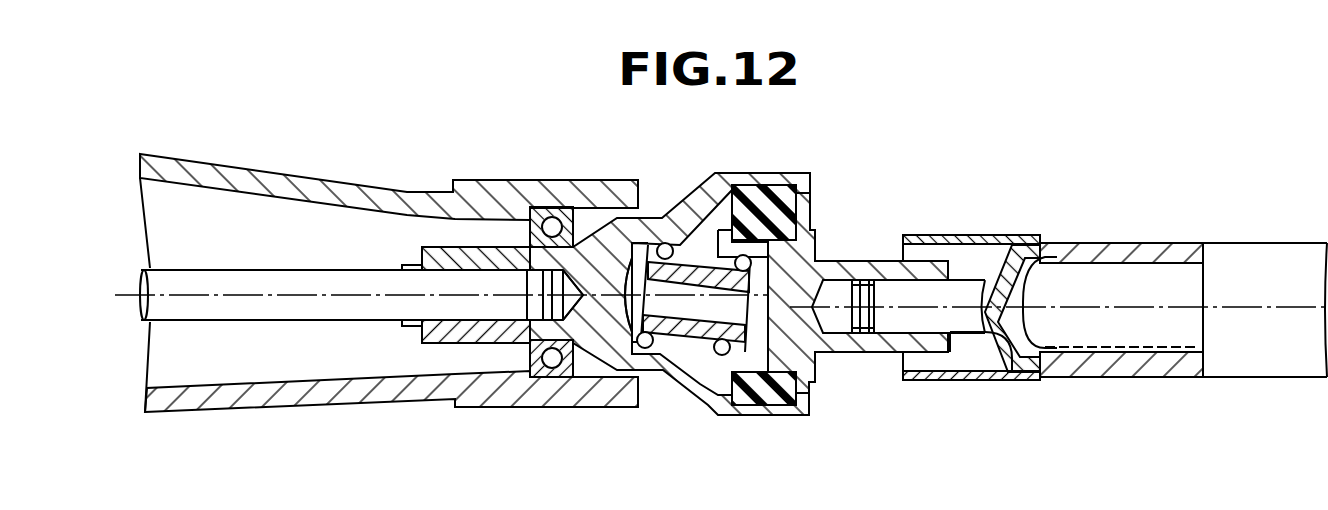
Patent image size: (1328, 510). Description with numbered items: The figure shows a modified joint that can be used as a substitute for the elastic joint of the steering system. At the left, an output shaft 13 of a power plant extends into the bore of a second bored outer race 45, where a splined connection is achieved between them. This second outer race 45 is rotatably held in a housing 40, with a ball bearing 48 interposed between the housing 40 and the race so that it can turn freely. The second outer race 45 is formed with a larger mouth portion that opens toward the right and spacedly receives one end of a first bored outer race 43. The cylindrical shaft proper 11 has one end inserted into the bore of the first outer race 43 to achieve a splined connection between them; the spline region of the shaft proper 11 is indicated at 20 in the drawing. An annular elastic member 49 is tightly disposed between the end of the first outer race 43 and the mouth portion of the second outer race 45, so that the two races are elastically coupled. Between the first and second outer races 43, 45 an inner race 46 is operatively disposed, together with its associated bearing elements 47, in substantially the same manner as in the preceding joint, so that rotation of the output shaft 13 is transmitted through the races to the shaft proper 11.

The cylindrical shaft proper 11 is at (1277, 257).
The output shaft 13 is at (289, 271).
The spline 20 is at (1155, 355).
The housing 40 is at (498, 180).
The first bored outer race 43 is at (862, 262).
The second bored outer race 45 is at (718, 174).
The inner race 46 is at (694, 352).
The cross spider 47 is at (668, 246).
The ball bearing 48 is at (552, 218).
The annular elastic member 49 is at (771, 190).